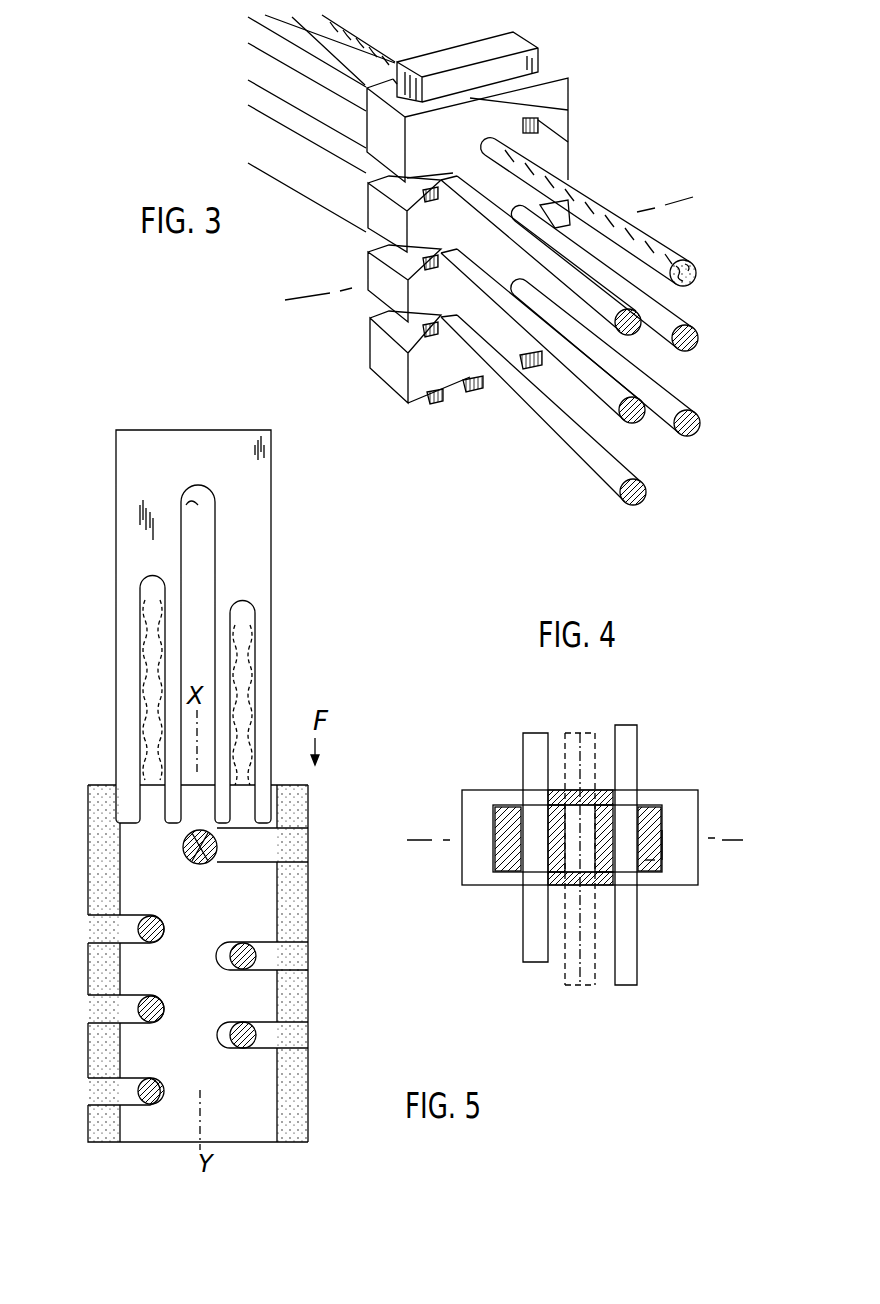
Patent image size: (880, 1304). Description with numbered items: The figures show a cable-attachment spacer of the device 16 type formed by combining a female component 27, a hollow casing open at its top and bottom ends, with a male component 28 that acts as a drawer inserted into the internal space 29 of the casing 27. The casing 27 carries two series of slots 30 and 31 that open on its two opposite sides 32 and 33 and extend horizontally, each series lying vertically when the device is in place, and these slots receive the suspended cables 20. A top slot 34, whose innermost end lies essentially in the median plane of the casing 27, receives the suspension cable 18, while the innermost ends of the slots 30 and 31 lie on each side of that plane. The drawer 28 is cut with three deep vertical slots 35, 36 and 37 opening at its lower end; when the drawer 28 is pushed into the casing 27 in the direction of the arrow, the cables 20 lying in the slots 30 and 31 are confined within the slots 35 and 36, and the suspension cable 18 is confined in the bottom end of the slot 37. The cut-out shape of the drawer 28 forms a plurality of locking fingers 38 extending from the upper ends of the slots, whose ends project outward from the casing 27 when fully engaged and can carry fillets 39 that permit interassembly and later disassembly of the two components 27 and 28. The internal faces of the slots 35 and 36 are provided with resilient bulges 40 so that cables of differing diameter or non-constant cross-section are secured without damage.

In FIG. 3, the electrical connector assembly 16 is at (598, 67).
In FIG. 3, the suspension cable 18 is at (608, 216).
In FIG. 4, the suspension cable 18 is at (588, 733).
In FIG. 5, the suspension cable 18 is at (198, 858).
In FIG. 3, the suspended cables 20 is at (698, 375).
In FIG. 4, the suspended cables 20 is at (535, 733).
In FIG. 5, the suspended cables 20 is at (230, 948).
In FIG. 3, the female component 27 is at (558, 160).
In FIG. 4, the female component 27 is at (490, 790).
In FIG. 5, the female component 27 is at (103, 848).
In FIG. 3, the male component 28 is at (469, 32).
In FIG. 4, the male component 28 is at (503, 874).
In FIG. 5, the male component 28 is at (130, 514).
In FIG. 4, the internal space 29 is at (645, 865).
In FIG. 5, the internal space 29 is at (295, 1122).
In FIG. 3, the slots 30 is at (407, 268).
In FIG. 4, the slots 30 is at (476, 865).
In FIG. 5, the slots 30 is at (100, 916).
In FIG. 4, the slots 31 is at (677, 860).
In FIG. 5, the slots 31 is at (290, 946).
In FIG. 5, the side of the casing 32 is at (82, 986).
In FIG. 5, the side of the casing 33 is at (318, 1003).
In FIG. 3, the top slot 34 is at (560, 113).
In FIG. 5, the top slot 34 is at (295, 841).
In FIG. 5, the slot 35 is at (141, 599).
In FIG. 5, the slot 36 is at (253, 617).
In FIG. 5, the slot 37 is at (198, 504).
In FIG. 3, the locking fingers 38 is at (503, 398).
In FIG. 4, the locking fingers 38 is at (500, 825).
In FIG. 5, the locking fingers 38 is at (123, 643).
In FIG. 3, the fillets 39 is at (418, 410).
In FIG. 5, the fillets 39 is at (276, 816).
In FIG. 5, the resilient bulges 40 is at (157, 671).